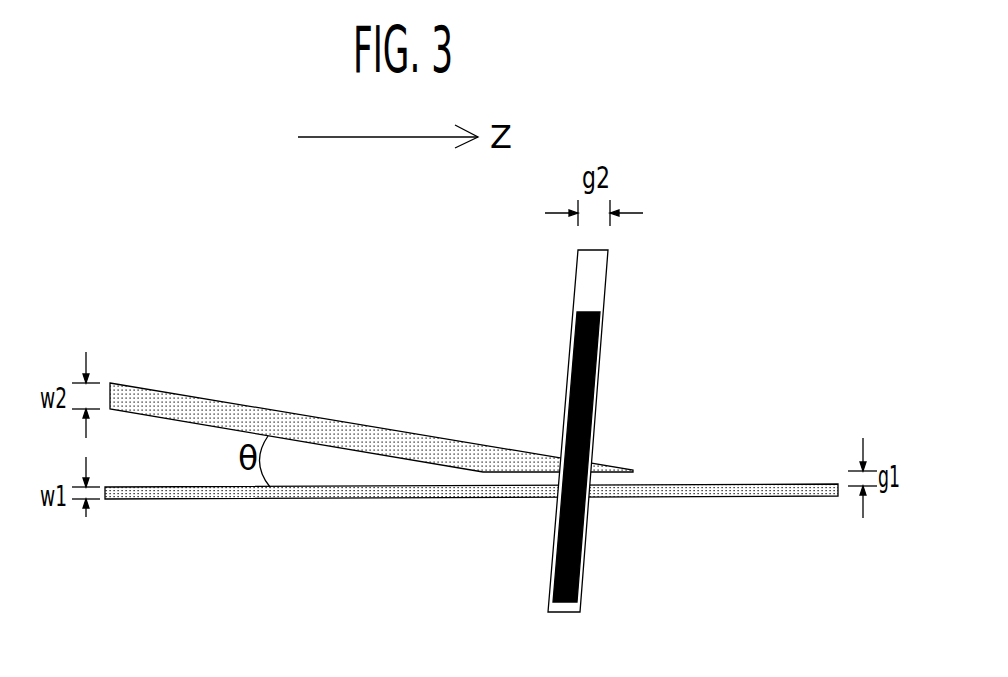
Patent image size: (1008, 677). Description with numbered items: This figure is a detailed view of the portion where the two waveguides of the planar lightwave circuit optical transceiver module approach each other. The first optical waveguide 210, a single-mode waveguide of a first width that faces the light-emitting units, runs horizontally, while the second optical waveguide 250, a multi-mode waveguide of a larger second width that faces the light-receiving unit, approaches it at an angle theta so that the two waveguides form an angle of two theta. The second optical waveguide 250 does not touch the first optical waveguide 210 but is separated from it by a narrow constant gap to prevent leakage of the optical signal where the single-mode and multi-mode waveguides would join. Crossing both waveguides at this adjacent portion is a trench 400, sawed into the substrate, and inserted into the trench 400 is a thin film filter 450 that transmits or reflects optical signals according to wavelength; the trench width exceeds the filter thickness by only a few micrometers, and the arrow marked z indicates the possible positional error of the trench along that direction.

The first optical waveguide 210 is at (296, 499).
The second optical waveguide 250 is at (262, 408).
The trench 400 is at (606, 282).
The thin film filter 450 is at (595, 363).